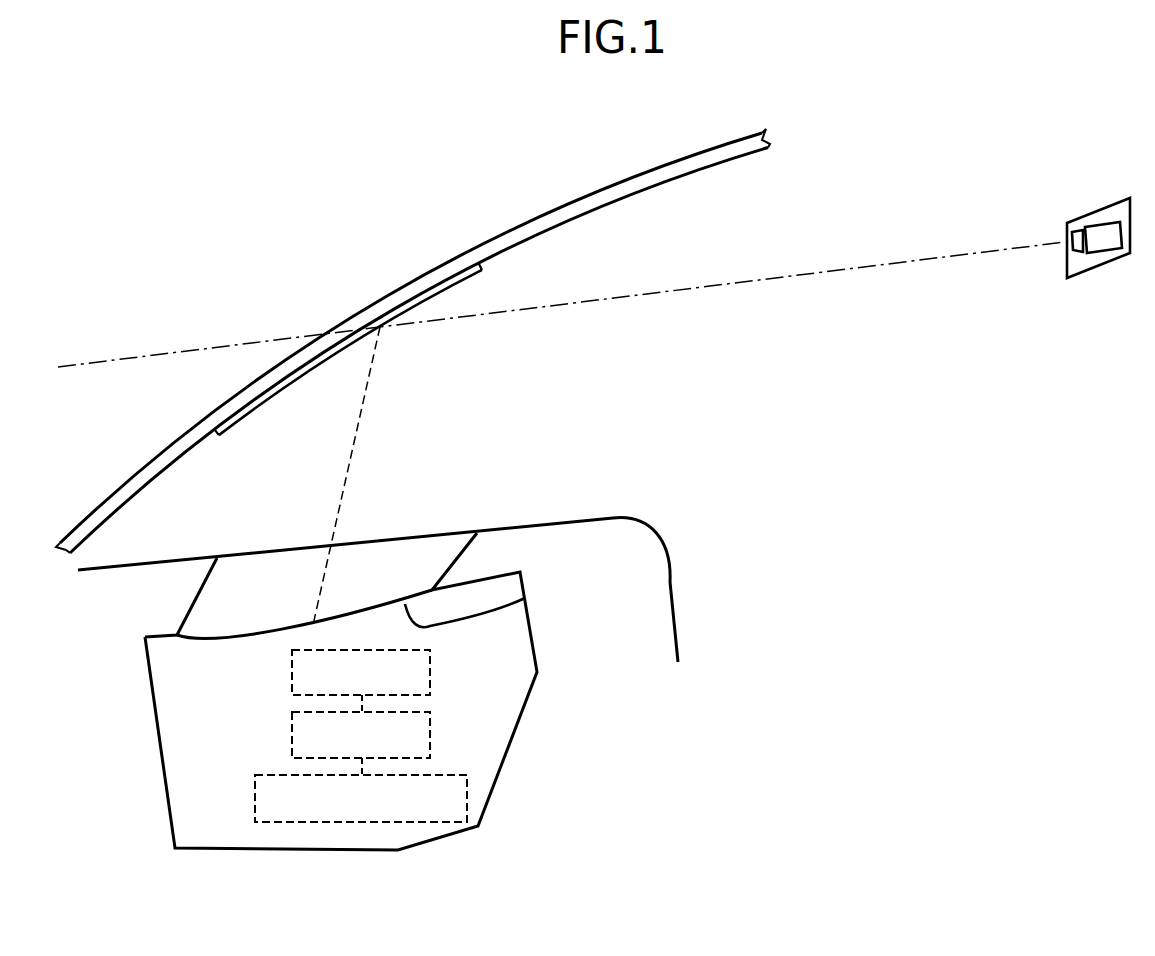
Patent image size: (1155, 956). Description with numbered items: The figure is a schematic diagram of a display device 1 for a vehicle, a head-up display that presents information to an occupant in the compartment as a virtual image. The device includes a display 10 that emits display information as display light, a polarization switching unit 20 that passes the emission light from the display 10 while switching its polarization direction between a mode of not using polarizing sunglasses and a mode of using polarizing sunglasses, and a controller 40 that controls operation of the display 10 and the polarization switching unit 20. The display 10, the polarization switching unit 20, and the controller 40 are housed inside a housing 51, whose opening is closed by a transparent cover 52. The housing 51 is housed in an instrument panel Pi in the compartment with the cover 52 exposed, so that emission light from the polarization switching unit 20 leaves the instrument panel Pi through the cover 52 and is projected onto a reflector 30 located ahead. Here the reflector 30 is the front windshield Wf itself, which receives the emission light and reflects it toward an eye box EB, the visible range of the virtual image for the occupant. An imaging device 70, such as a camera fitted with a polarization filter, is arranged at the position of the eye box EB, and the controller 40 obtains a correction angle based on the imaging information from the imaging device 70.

The display device for a vehicle 1 is at (282, 303).
The display 10 is at (292, 673).
The polarization switching unit 20 is at (255, 803).
The reflector 30 is at (455, 291).
The controller 40 is at (292, 738).
The housing 51 is at (518, 720).
The transparent cover 52 is at (525, 598).
The imaging device 70 is at (1105, 252).
The front windshield Wf is at (585, 198).
The eye box EB is at (1095, 210).
The instrument panel Pi is at (673, 615).